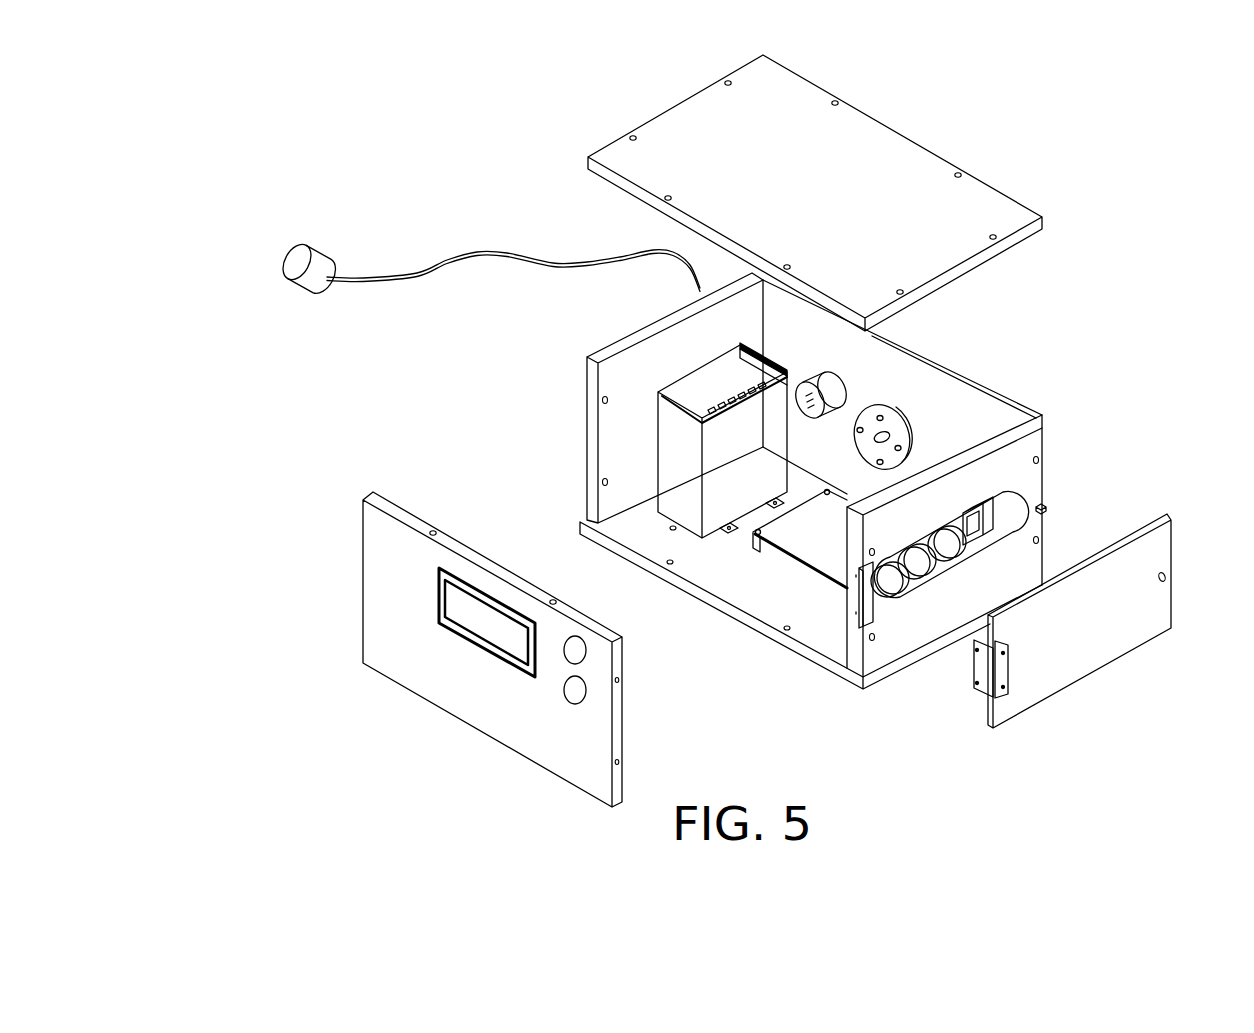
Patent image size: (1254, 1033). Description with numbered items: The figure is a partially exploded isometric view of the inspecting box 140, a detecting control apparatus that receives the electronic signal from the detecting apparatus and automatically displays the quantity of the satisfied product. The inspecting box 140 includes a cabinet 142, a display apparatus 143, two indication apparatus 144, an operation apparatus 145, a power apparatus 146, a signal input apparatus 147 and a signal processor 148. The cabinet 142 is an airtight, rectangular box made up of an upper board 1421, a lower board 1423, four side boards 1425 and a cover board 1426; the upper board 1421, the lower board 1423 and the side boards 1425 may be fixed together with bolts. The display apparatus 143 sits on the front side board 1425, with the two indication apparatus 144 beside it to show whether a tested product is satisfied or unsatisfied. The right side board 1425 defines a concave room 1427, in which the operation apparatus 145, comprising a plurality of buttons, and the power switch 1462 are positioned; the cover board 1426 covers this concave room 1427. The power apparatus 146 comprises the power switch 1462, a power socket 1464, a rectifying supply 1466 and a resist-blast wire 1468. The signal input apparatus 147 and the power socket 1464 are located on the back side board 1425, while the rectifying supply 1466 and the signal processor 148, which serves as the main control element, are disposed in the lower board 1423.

The inspecting box 140 is at (664, 80).
The cabinet 142 is at (252, 313).
The upper board 1421 is at (633, 162).
The lower board 1423 is at (587, 527).
The side boards 1425 is at (380, 582).
The cover board 1426 is at (1098, 643).
The concave room 1427 is at (1005, 513).
The display apparatus 143 is at (470, 610).
The indication apparatus 144 is at (577, 653).
The operation apparatus 145 is at (893, 582).
The power apparatus 146 is at (1185, 157).
The power switch 1462 is at (980, 518).
The power socket 1464 is at (825, 388).
The rectifying supply 1466 is at (767, 428).
The resist-blast wire 1468 is at (660, 243).
The signal input apparatus 147 is at (872, 440).
The signal processor 148 is at (820, 548).